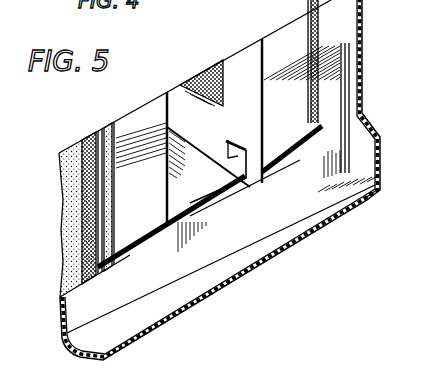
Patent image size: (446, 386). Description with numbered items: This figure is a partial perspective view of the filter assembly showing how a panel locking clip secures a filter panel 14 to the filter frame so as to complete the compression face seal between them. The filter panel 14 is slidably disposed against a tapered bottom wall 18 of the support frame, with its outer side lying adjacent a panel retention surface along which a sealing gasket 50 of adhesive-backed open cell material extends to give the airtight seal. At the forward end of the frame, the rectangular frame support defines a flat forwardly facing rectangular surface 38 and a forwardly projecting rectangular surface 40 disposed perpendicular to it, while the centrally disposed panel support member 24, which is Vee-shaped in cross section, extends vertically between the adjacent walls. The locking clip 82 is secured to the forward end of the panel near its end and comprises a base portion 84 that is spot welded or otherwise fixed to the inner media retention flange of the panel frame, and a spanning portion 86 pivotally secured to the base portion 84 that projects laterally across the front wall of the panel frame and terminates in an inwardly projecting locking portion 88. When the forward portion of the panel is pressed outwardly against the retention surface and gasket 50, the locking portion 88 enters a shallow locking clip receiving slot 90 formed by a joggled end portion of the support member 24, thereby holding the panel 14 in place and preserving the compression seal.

The filter panel 14 is at (137, 120).
The tapered bottom wall 18 is at (233, 202).
The panel support member 24 is at (80, 233).
The flat forwardly facing rectangular surface 38 is at (263, 200).
The forwardly projecting rectangular surface 40 is at (356, 201).
The sealing gasket 50 is at (75, 177).
The locking clip 82 is at (147, 233).
The base portion 84 is at (233, 157).
The spanning portion 86 is at (267, 163).
The locking portion 88 is at (64, 296).
The locking clip receiving slot 90 is at (70, 271).